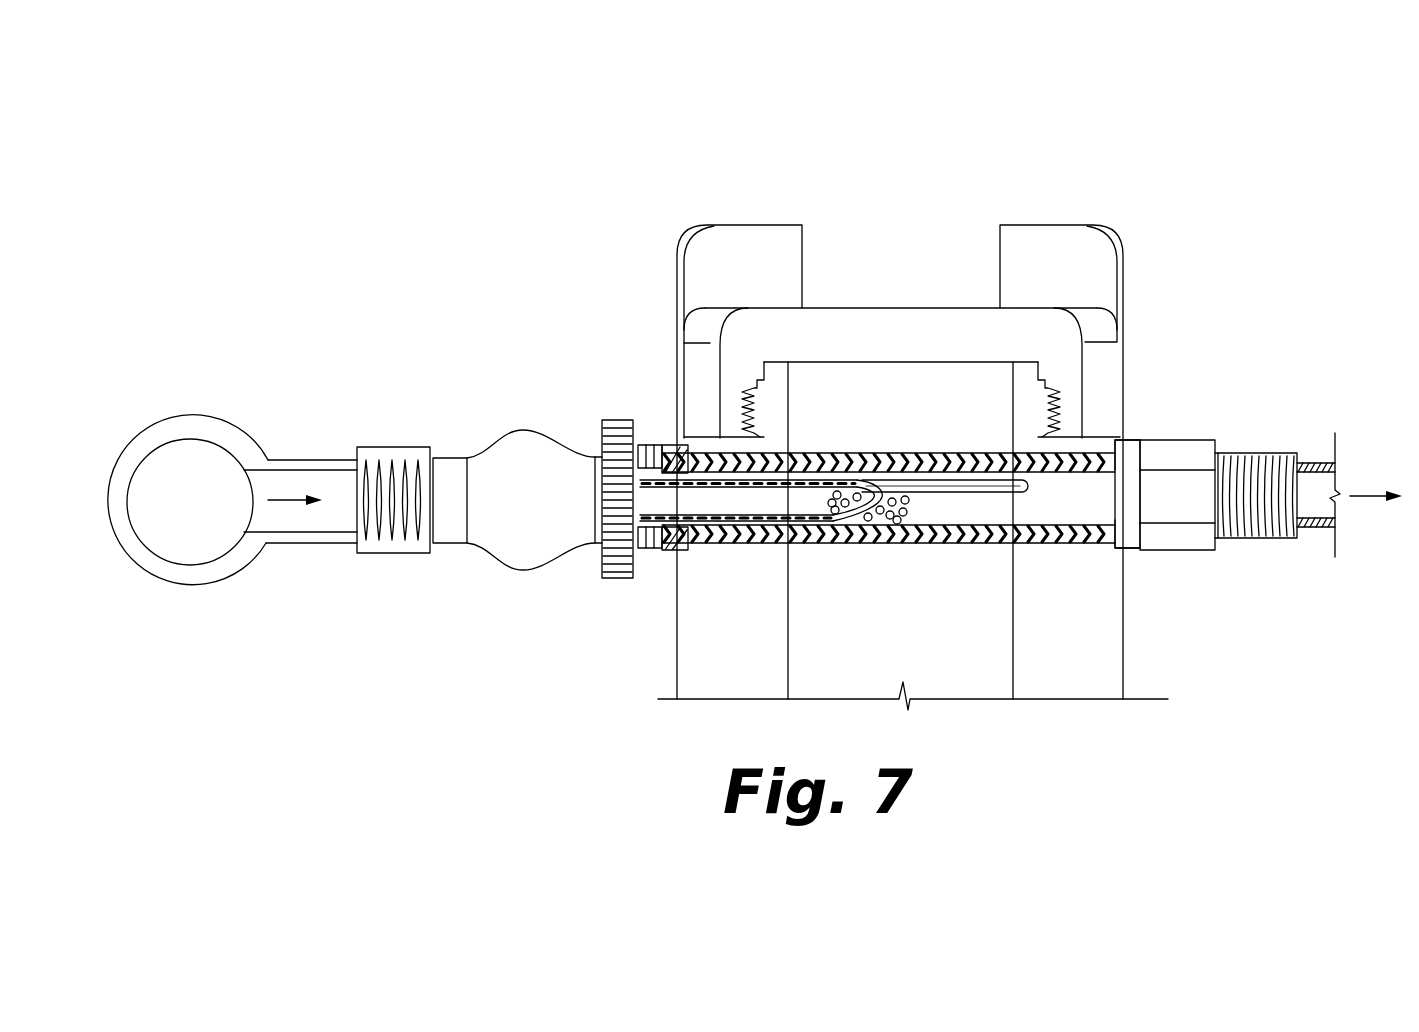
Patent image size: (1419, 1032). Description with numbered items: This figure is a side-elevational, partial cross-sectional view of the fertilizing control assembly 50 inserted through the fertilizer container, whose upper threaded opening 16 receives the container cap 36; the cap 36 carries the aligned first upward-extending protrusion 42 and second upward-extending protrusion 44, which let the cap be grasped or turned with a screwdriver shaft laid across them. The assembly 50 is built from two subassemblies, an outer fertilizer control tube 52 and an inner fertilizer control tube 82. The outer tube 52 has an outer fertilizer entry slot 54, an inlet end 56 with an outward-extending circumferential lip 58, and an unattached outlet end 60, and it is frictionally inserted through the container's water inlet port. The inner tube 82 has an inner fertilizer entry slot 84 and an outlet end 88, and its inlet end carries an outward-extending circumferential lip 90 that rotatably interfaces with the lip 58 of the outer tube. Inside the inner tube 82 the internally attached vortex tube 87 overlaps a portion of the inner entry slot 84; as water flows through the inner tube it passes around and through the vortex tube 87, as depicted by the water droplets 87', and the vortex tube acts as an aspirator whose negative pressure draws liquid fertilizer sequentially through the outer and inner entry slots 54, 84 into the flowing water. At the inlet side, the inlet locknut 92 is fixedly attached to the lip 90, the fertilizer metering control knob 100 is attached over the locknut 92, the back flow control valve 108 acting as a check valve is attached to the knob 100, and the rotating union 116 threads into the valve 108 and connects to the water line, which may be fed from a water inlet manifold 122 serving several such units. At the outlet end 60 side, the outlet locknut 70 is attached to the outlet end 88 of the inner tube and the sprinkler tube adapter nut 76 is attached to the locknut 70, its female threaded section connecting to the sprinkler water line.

The threaded opening 16 is at (1063, 388).
The container cap 36 is at (1028, 338).
The first upward-extending protrusion 42 is at (727, 237).
The second upward-extending protrusion 44 is at (1045, 238).
The fertilizing control assembly 50 is at (475, 384).
The outer fertilizer control tube 52 is at (813, 460).
The outer fertilizer entry slot 54 is at (960, 487).
The inlet end 56 is at (720, 343).
The outward-extending circumferential lip 58 is at (693, 452).
The outlet end 60 is at (1128, 455).
The outlet locknut 70 is at (1127, 543).
The sprinkler tube adapter nut 76 is at (1185, 535).
The inner fertilizer control tube 82 is at (900, 460).
The inner fertilizer entry slot 84 is at (1068, 588).
The vortex tube 87 is at (837, 571).
The water droplets 87' is at (913, 573).
The outlet end 88 is at (1135, 458).
The outward-extending circumferential lip 90 is at (660, 450).
The inlet locknut 92 is at (640, 568).
The fertilizer metering control knob 100 is at (603, 560).
The back flow control valve 108 is at (528, 527).
The rotating union 116 is at (403, 550).
The water inlet manifold 122 is at (215, 573).